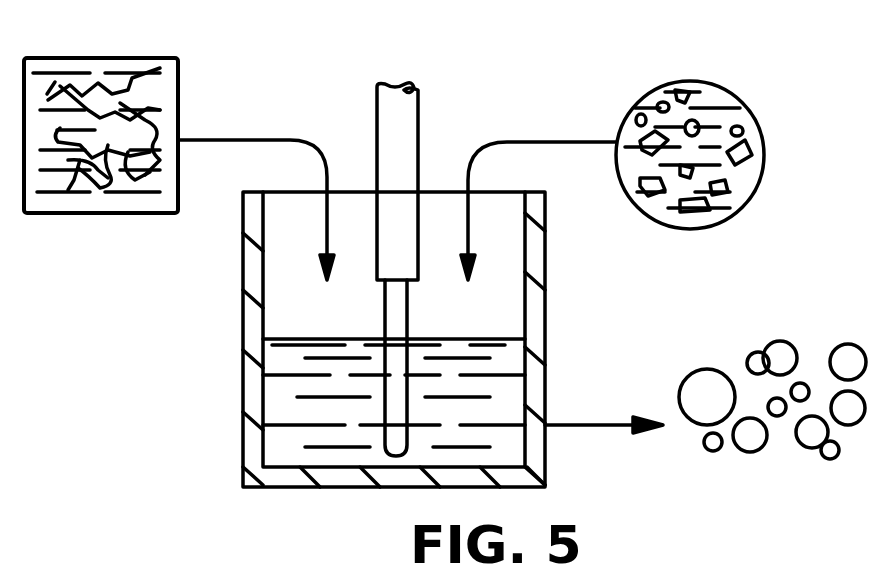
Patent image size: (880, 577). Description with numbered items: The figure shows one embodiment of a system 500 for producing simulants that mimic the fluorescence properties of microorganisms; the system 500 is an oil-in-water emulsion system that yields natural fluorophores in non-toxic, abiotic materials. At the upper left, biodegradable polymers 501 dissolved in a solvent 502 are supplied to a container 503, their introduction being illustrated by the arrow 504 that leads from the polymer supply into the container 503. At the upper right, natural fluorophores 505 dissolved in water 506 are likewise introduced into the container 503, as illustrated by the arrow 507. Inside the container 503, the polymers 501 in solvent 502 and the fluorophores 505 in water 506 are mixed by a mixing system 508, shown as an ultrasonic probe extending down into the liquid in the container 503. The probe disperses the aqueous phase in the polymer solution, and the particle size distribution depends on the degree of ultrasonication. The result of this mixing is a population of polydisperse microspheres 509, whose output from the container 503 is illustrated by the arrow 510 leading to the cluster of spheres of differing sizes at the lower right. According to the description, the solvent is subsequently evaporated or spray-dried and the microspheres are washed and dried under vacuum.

The system 500 is at (630, 52).
The biodegradable polymers 501 is at (78, 190).
The solvent 502 is at (160, 98).
The container 503 is at (243, 380).
The arrow 504 is at (250, 140).
The natural fluorophores 505 is at (705, 94).
The water 506 is at (745, 180).
The arrow 507 is at (553, 142).
The mixing system 508 is at (418, 98).
The polydisperse microspheres 509 is at (805, 452).
The arrow 510 is at (602, 424).